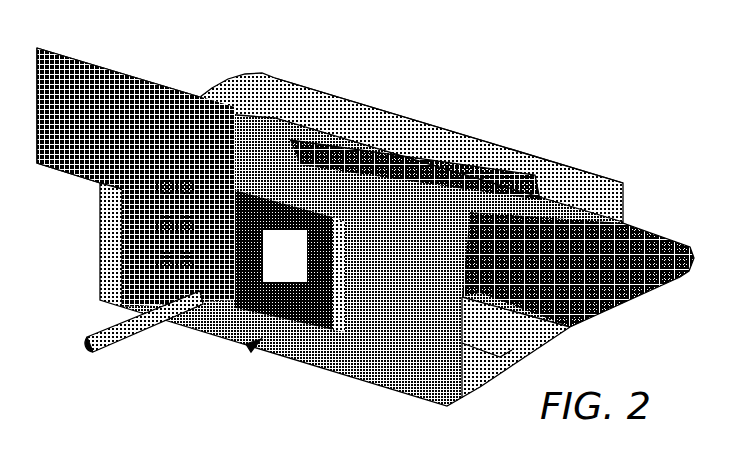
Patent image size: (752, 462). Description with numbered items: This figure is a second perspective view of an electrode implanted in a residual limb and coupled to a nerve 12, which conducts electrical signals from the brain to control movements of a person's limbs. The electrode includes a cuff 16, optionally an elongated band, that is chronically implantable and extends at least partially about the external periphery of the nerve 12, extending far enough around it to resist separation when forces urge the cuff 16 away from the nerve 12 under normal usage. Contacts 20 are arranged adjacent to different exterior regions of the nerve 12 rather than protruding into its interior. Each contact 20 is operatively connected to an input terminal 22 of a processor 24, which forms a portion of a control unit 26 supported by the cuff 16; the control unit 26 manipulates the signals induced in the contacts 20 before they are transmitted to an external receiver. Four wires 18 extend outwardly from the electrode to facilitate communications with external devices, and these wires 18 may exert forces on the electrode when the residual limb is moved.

The nerve 12 is at (84, 106).
The cuff 16 is at (591, 173).
The wires 18 is at (113, 341).
The contacts 20 is at (403, 167).
The input terminal 22 is at (293, 336).
The processor 24 is at (297, 266).
The control unit 26 is at (249, 347).